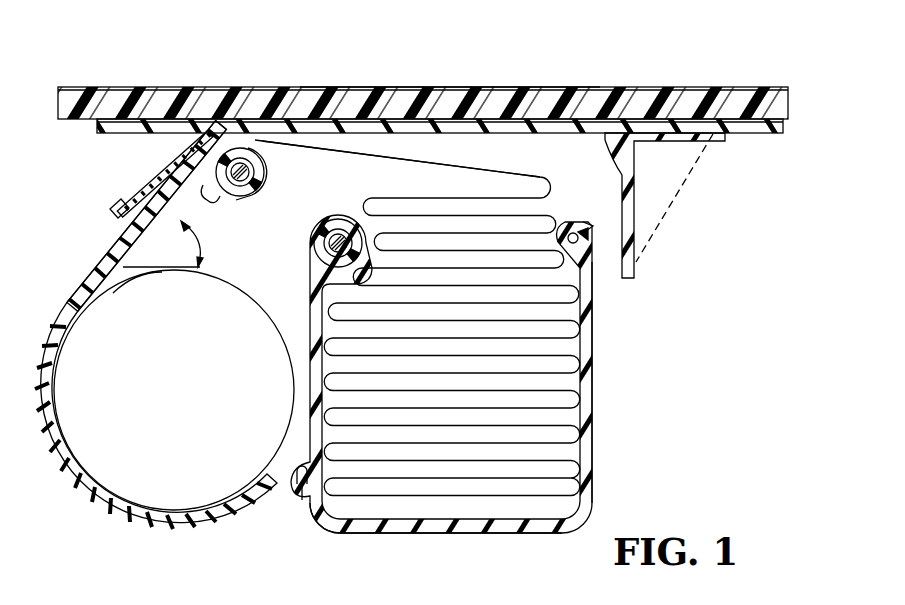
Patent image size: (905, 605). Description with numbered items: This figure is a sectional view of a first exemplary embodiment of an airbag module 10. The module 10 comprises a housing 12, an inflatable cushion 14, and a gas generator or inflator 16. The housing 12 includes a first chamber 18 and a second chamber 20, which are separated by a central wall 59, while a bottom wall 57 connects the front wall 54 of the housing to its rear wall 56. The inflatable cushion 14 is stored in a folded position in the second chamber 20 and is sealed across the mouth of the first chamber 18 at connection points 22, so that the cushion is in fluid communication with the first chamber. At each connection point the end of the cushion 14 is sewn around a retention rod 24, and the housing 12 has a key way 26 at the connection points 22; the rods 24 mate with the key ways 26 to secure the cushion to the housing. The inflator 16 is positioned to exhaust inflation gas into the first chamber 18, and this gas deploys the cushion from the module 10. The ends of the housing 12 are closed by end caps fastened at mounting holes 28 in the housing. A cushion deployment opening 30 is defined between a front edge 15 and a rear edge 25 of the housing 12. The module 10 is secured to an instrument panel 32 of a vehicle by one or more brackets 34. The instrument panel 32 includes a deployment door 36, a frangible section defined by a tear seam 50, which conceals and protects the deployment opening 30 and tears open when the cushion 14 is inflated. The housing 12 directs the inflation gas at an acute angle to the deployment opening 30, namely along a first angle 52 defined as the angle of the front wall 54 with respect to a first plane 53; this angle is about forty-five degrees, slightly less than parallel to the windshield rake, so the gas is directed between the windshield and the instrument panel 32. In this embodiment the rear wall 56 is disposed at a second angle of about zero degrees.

The airbag module 10 is at (83, 518).
The housing 12 is at (455, 533).
The inflatable cushion 14 is at (583, 415).
The front edge 15 is at (268, 143).
The inflator 16 is at (123, 443).
The first chamber 18 is at (143, 197).
The second chamber 20 is at (540, 344).
The connection points 22 is at (228, 165).
The retention rod 24 is at (225, 168).
The rear edge 25 is at (590, 225).
The key way 26 is at (328, 220).
The mounting holes 28 is at (198, 218).
The cushion deployment opening 30 is at (520, 183).
The instrument panel 32 is at (88, 85).
The bracket 34 is at (713, 136).
The deployment door 36 is at (475, 82).
The tear seam 50 is at (632, 132).
The first angle 52 is at (167, 247).
The first plane 53 is at (122, 290).
The front wall 54 is at (120, 262).
The rear wall 56 is at (595, 380).
The bottom wall 57 is at (350, 533).
The central wall 59 is at (307, 290).